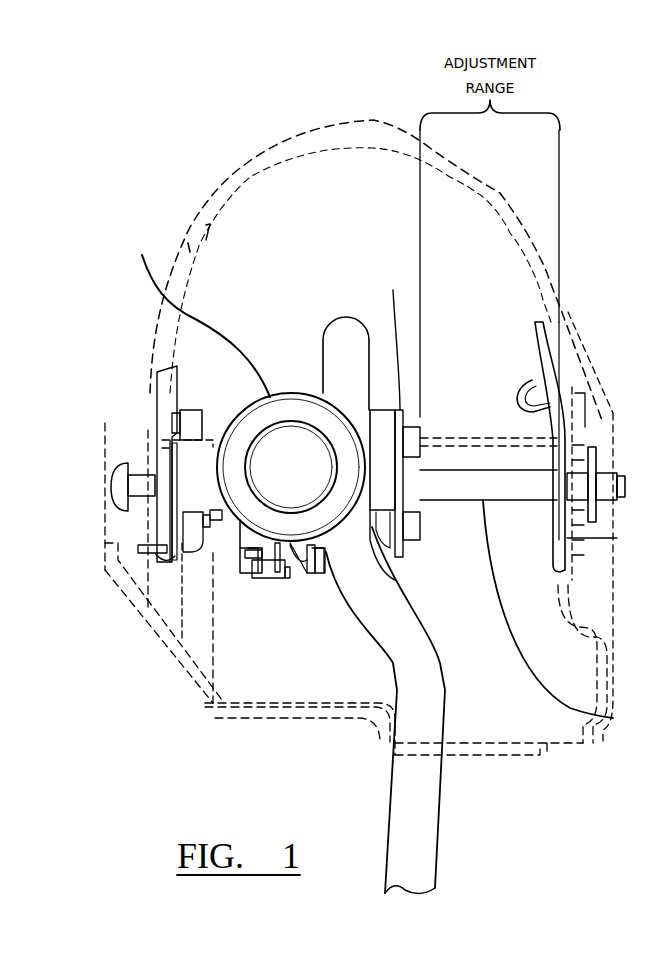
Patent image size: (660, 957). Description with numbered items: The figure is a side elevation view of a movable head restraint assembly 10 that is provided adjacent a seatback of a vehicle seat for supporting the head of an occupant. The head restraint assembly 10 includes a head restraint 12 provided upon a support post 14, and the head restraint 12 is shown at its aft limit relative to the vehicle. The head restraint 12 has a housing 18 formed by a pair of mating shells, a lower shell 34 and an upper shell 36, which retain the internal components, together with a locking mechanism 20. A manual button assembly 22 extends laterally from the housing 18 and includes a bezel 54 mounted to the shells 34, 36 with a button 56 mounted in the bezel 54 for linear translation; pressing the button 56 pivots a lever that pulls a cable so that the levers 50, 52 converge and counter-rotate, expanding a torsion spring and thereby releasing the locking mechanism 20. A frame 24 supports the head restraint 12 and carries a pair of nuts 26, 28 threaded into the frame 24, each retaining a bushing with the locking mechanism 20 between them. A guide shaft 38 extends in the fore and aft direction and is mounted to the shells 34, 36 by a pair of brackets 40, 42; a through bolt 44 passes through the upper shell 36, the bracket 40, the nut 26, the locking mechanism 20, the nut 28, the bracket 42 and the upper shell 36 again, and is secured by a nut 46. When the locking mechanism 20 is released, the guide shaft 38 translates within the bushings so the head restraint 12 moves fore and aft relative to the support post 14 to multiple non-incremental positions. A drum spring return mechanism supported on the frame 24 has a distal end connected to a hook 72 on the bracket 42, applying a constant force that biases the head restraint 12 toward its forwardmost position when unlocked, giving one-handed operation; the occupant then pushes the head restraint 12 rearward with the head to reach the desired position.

The head restraint assembly 10 is at (132, 106).
The head restraint 12 is at (192, 228).
The support post 14 is at (438, 803).
The housing 18 is at (325, 129).
The locking mechanism 20 is at (292, 588).
The button assembly 22 is at (235, 518).
The frame 24 is at (382, 407).
The nut 26 is at (173, 433).
The nut 28 is at (382, 407).
The lower shell 34 is at (295, 720).
The upper shell 36 is at (248, 163).
The guide shaft 38 is at (561, 618).
The bracket 40 is at (172, 425).
The bracket 42 is at (560, 560).
The through bolt 44 is at (113, 490).
The nut 46 is at (605, 473).
The lever 50 is at (268, 577).
The lever 52 is at (320, 580).
The bezel 54 is at (199, 310).
The button 56 is at (306, 484).
The hook 72 is at (517, 400).